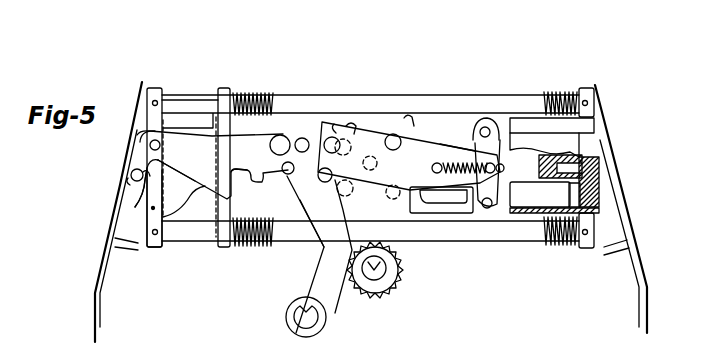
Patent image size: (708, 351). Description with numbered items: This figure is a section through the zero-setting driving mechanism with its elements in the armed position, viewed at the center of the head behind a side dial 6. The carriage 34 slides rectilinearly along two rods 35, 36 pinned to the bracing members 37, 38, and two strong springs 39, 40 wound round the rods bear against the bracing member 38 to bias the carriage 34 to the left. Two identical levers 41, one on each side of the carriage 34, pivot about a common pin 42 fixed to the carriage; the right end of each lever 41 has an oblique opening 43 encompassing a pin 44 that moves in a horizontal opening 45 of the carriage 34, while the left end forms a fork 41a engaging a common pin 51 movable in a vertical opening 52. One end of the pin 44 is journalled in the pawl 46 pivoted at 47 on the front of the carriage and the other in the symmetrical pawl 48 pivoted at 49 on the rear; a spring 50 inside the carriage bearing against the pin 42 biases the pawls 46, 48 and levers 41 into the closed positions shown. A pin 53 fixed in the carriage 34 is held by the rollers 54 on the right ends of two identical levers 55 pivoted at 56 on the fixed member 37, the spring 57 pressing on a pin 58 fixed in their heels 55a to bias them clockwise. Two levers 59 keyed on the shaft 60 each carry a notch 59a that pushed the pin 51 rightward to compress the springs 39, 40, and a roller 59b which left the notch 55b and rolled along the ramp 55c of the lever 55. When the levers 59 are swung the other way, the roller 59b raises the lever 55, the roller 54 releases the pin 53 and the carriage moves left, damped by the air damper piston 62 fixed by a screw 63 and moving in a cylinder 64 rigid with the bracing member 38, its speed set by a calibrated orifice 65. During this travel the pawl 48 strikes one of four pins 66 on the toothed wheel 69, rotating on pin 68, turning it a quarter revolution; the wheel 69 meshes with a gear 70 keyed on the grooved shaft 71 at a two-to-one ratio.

The dial 6 is at (604, 113).
The carriage 34 is at (227, 237).
The rod 35 is at (173, 100).
The rod 36 is at (180, 236).
The bracing member 37 is at (117, 240).
The bracing member 38 is at (588, 95).
The spring 39 is at (557, 92).
The spring 40 is at (575, 242).
The lever 41 is at (452, 152).
The fork 41a is at (353, 128).
The pin 42 is at (438, 162).
The oblique opening 43 is at (497, 183).
The pin 44 is at (497, 157).
The horizontal opening 45 is at (488, 168).
The pawl 46 is at (456, 214).
The pivot 47 is at (492, 208).
The pawl 48 is at (428, 127).
The pivot 49 is at (485, 126).
The spring 50 is at (467, 158).
The pin 51 is at (330, 139).
The vertical opening 52 is at (322, 180).
The pin 53 is at (302, 138).
The roller 54 is at (279, 137).
The lever 55 is at (178, 174).
The heel 55a is at (148, 182).
The notch 55b is at (184, 163).
The ramp 55c is at (247, 159).
The pivot 56 is at (150, 145).
The spring 57 is at (152, 208).
The pin 58 is at (131, 175).
The lever 59 is at (319, 287).
The notch 59a is at (326, 213).
The roller 59b is at (286, 175).
The shaft 60 is at (300, 313).
The air damper piston 62 is at (579, 203).
The screw 63 is at (590, 157).
The cylinder 64 is at (605, 210).
The calibrated orifice 65 is at (600, 168).
The pin 66 is at (400, 197).
The pin 68 is at (369, 150).
The toothed wheel 69 is at (404, 262).
The gear 70 is at (399, 287).
The grooved shaft 71 is at (375, 275).